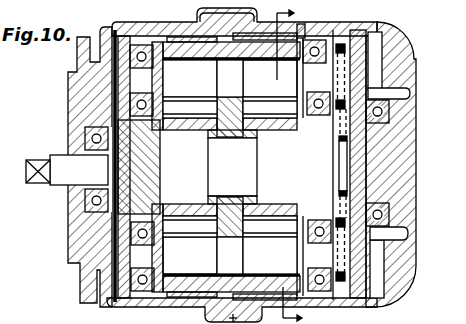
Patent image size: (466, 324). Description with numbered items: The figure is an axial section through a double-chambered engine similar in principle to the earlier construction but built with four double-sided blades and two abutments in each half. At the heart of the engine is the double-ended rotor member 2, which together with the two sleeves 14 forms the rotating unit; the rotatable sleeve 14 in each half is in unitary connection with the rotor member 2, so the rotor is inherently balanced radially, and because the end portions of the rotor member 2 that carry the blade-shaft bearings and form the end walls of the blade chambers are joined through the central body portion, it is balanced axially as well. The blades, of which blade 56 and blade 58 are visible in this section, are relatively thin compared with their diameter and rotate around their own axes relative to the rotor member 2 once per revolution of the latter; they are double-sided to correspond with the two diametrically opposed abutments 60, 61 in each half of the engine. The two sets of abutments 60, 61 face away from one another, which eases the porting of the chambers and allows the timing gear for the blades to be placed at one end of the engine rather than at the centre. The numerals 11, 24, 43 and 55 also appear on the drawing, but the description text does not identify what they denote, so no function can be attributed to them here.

The rotor member 2 is at (159, 121).
The section line 11 is at (304, 162).
The sleeve 14 is at (175, 34).
The shaft 24 is at (63, 170).
The housing cover ring 43 is at (304, 30).
The end cover 55 is at (391, 3).
The blade 56 is at (293, 78).
The blade 58 is at (173, 253).
The abutment 60 is at (190, 49).
The abutment 61 is at (182, 272).